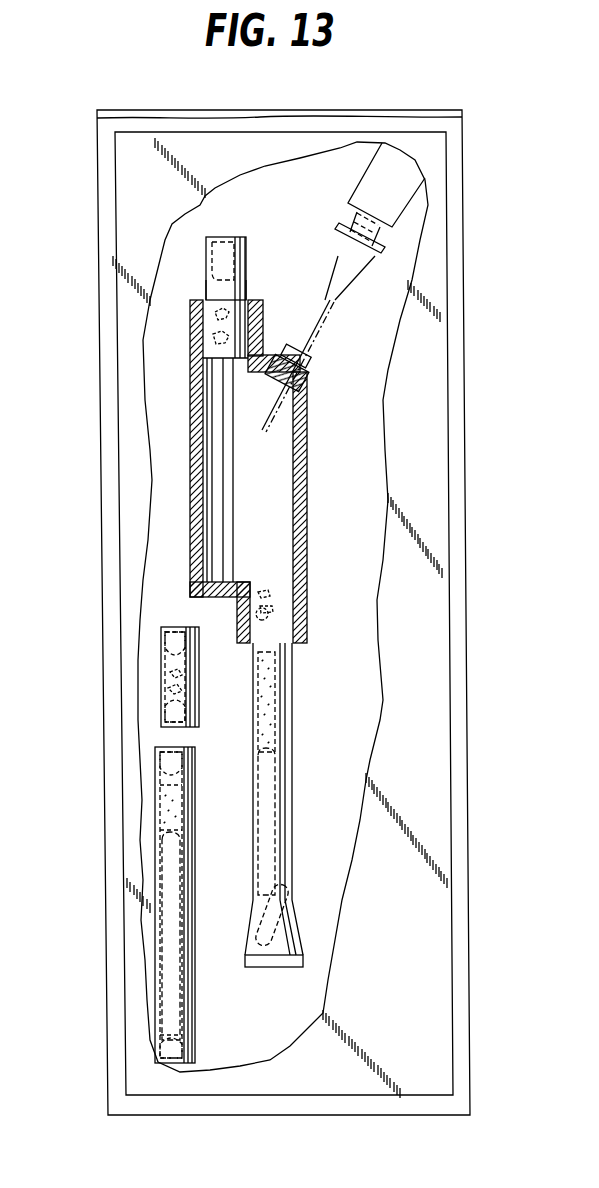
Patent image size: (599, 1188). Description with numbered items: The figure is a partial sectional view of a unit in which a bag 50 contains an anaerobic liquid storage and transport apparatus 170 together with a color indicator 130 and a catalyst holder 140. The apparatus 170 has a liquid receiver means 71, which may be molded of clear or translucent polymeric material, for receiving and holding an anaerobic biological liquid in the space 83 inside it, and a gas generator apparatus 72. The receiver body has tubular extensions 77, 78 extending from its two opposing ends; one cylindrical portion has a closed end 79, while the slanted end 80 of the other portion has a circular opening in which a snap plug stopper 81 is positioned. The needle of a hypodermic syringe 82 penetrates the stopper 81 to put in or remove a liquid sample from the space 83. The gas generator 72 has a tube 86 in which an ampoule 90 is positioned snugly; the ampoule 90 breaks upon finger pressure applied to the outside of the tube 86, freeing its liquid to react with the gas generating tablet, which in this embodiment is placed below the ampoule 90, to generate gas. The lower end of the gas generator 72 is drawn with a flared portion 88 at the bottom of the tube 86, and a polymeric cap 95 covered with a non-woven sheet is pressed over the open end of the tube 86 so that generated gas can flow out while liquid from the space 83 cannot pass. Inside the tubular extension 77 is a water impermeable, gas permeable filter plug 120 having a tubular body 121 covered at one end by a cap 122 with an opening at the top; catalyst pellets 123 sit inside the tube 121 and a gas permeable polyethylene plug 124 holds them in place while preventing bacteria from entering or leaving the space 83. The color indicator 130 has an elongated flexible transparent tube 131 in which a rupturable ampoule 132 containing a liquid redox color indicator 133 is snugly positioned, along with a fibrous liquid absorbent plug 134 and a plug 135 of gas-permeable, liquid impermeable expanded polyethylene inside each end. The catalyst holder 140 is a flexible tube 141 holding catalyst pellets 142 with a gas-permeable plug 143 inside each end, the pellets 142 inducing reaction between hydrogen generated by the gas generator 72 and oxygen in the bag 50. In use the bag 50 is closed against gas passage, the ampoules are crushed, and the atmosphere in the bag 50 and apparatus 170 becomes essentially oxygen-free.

The bag 50 is at (80, 593).
The liquid receiver means 71 is at (322, 490).
The gas generator apparatus 72 is at (318, 731).
The tubular extension 77 is at (262, 327).
The tubular extension 78 is at (237, 613).
The closed end 79 is at (213, 598).
The slanted end 80 is at (305, 392).
The snap plug stopper 81 is at (303, 380).
The hypodermic syringe 82 is at (346, 186).
The space 83 is at (282, 538).
The tube 86 is at (268, 762).
The flange 88 is at (285, 968).
The ampoule 90 is at (278, 832).
The polymeric cap 95 is at (290, 628).
The filter plug 120 is at (268, 258).
The tubular body 121 is at (214, 266).
The cap 122 is at (205, 300).
The catalyst pellets 123 is at (203, 337).
The gas permeable polyethylene plug 124 is at (228, 245).
The color indicator 130 is at (143, 880).
The elongated flexible transparent tube 131 is at (196, 853).
The rupturable ampoule 132 is at (165, 990).
The liquid redox color indicator 133 is at (168, 946).
The fibrous liquid absorbent plug 134 is at (160, 805).
The plug 135 is at (192, 768).
The catalyst holder 140 is at (149, 695).
The flexible tube 141 is at (162, 666).
The catalyst pellets 142 is at (200, 688).
The gas-permeable plug 143 is at (188, 650).
The anaerobic liquid storage and transport apparatus 170 is at (174, 482).